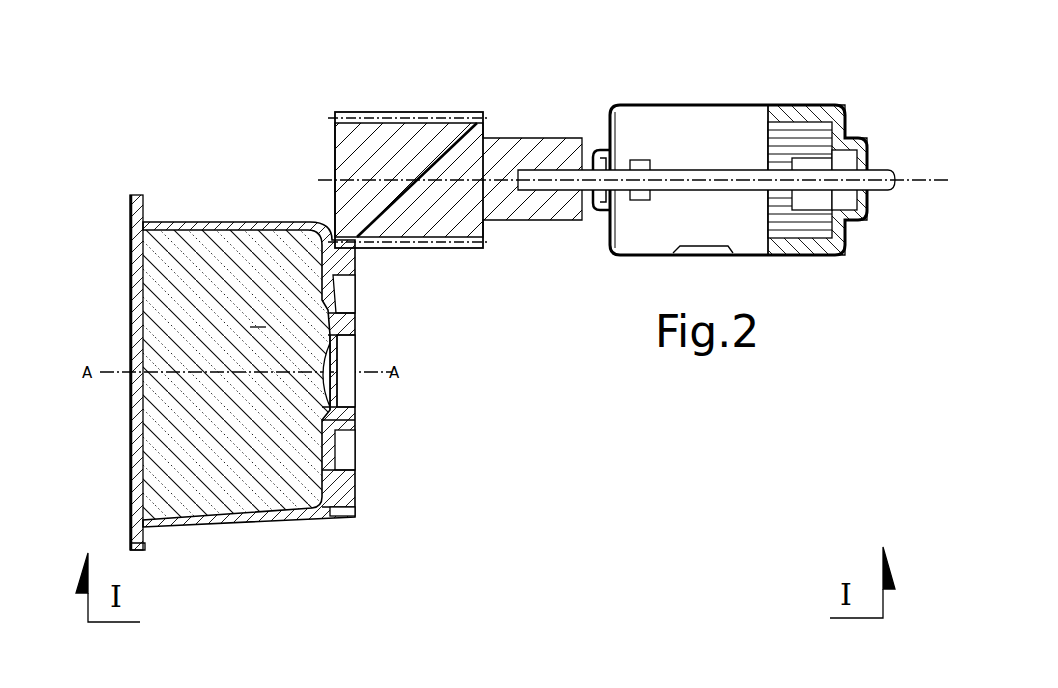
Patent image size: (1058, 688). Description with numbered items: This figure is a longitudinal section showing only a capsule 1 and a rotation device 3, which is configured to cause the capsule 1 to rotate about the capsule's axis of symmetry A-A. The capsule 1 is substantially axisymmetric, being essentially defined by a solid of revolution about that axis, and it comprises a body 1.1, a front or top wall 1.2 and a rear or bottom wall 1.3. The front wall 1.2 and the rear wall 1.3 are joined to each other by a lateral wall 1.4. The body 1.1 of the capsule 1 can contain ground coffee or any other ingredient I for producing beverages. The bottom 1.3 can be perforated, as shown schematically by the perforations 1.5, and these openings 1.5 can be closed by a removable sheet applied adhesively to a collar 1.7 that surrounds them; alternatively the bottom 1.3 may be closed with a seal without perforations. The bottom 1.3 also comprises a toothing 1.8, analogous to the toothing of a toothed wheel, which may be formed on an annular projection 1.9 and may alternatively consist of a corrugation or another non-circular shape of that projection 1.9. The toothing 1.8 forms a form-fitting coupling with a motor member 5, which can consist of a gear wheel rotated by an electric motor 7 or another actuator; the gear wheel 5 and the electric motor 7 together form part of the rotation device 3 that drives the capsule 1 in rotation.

The capsule 1 is at (231, 541).
The body 1.1 is at (188, 505).
The front or top wall 1.2 is at (130, 305).
The rear or bottom wall 1.3 is at (345, 445).
The lateral wall 1.4 is at (232, 221).
The perforations 1.5 is at (337, 342).
The collar 1.7 is at (344, 327).
The toothing 1.8 is at (340, 513).
The annular projection 1.9 is at (350, 487).
The rotation device 3 is at (563, 62).
The motor member 5 is at (436, 135).
The electric motor 7 is at (690, 105).